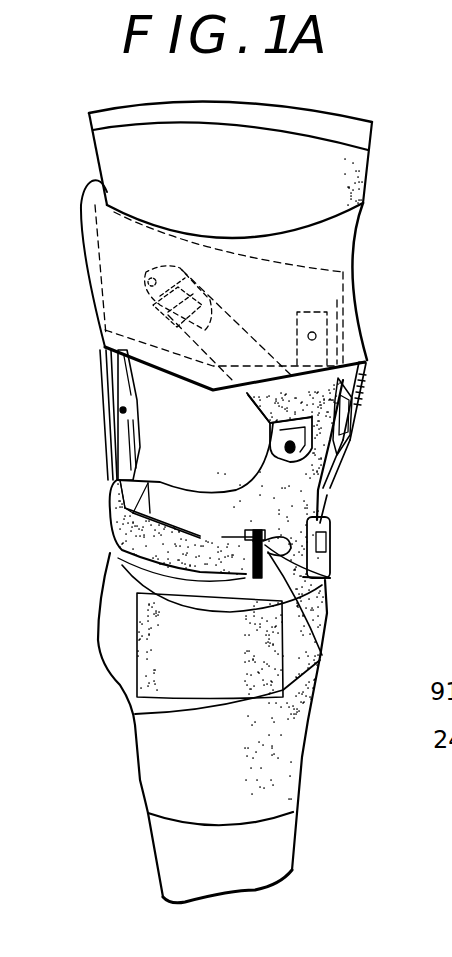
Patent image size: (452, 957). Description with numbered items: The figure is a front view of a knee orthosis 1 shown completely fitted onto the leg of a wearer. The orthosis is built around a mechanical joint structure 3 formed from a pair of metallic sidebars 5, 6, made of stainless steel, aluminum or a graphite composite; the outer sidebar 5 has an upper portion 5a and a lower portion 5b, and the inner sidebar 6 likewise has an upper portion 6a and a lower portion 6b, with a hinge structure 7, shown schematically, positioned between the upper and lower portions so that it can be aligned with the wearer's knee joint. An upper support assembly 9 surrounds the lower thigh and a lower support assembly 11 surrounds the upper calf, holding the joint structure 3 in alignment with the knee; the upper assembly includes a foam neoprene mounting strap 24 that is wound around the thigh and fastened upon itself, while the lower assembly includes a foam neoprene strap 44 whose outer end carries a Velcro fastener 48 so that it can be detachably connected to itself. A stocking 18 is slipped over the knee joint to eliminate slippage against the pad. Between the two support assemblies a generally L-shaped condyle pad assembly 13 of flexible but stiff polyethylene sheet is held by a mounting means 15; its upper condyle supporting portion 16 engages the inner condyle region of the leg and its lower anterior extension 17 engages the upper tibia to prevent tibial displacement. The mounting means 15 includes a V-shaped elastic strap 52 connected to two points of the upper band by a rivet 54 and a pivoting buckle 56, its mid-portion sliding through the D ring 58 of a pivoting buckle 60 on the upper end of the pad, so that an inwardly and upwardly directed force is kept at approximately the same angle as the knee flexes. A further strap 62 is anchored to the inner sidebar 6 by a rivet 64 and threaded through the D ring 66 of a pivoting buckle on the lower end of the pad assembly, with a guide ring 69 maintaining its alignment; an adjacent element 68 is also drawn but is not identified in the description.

The knee orthosis 1 is at (82, 172).
The mechanical joint structure 3 is at (98, 392).
The sidebar 5 is at (104, 427).
The upper portion of sidebar 5a is at (107, 372).
The lower portion of sidebar 5b is at (111, 473).
The inner sidebar 6 is at (352, 452).
The upper portion of inner sidebar 6a is at (363, 368).
The lower portion of inner sidebar 6b is at (330, 512).
The hinge structure 7 is at (100, 413).
The upper support assembly 9 is at (272, 333).
The lower support assembly 11 is at (188, 693).
The condyle pad assembly 13 is at (280, 513).
The mounting means 15 is at (275, 462).
The condyle supporting portion 16 is at (333, 495).
The anterior extension 17 is at (233, 590).
The stocking 18 is at (223, 185).
The mounting strap 24 is at (353, 242).
The strap 44 is at (113, 657).
The Velcro fastener 48 is at (267, 673).
The V-shaped elastic strap 52 is at (253, 403).
The rivet 54 is at (316, 336).
The pivoting buckle 56 is at (213, 277).
The D ring 58 is at (347, 400).
The pivoting buckle 60 is at (277, 435).
The strap 62 is at (200, 580).
The rivet 64 is at (327, 543).
The D ring 66 is at (300, 650).
The fastener strap 68 is at (290, 578).
The guide ring 69 is at (155, 495).